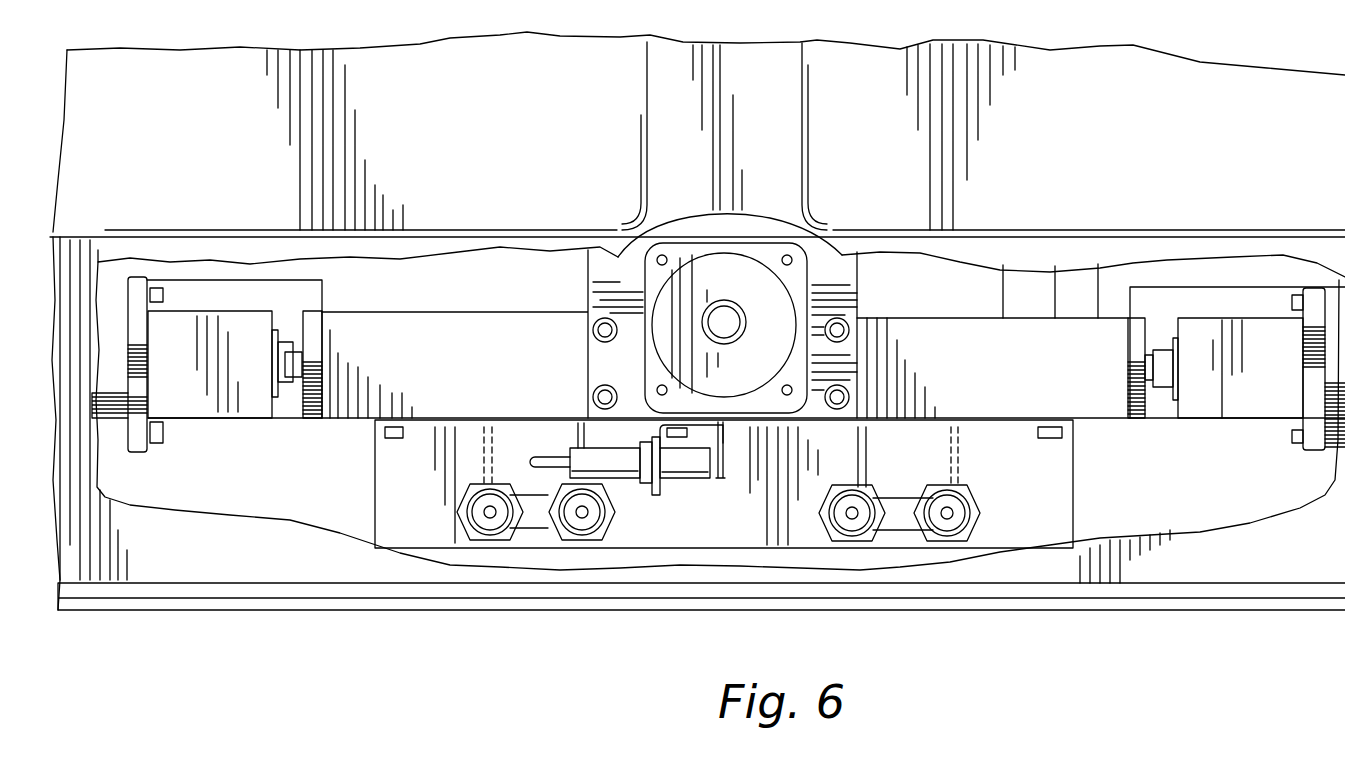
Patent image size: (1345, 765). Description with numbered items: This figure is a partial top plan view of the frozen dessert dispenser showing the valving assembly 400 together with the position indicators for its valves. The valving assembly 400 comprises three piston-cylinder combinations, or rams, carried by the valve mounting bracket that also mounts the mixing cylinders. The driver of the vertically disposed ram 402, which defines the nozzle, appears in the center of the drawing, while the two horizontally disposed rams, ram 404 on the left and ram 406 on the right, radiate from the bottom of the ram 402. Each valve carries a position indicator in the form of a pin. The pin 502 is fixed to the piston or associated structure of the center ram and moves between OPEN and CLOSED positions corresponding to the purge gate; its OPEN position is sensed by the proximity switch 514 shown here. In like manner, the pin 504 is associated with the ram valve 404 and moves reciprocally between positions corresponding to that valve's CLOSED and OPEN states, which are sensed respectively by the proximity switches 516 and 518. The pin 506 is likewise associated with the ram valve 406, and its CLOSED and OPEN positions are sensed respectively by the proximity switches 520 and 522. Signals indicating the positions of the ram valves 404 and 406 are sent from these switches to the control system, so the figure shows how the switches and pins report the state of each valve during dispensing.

The valving assembly 400 is at (827, 250).
The vertically disposed ram 402 is at (660, 283).
The horizontally disposed ram 404 is at (352, 424).
The horizontally disposed ram 406 is at (1107, 428).
The pin 502 is at (735, 481).
The pin 504 is at (578, 447).
The pin 506 is at (868, 460).
The proximity switch 514 is at (702, 481).
The proximity switch 516 is at (597, 535).
The proximity switch 518 is at (503, 535).
The proximity switch 520 is at (863, 538).
The proximity switch 522 is at (968, 540).